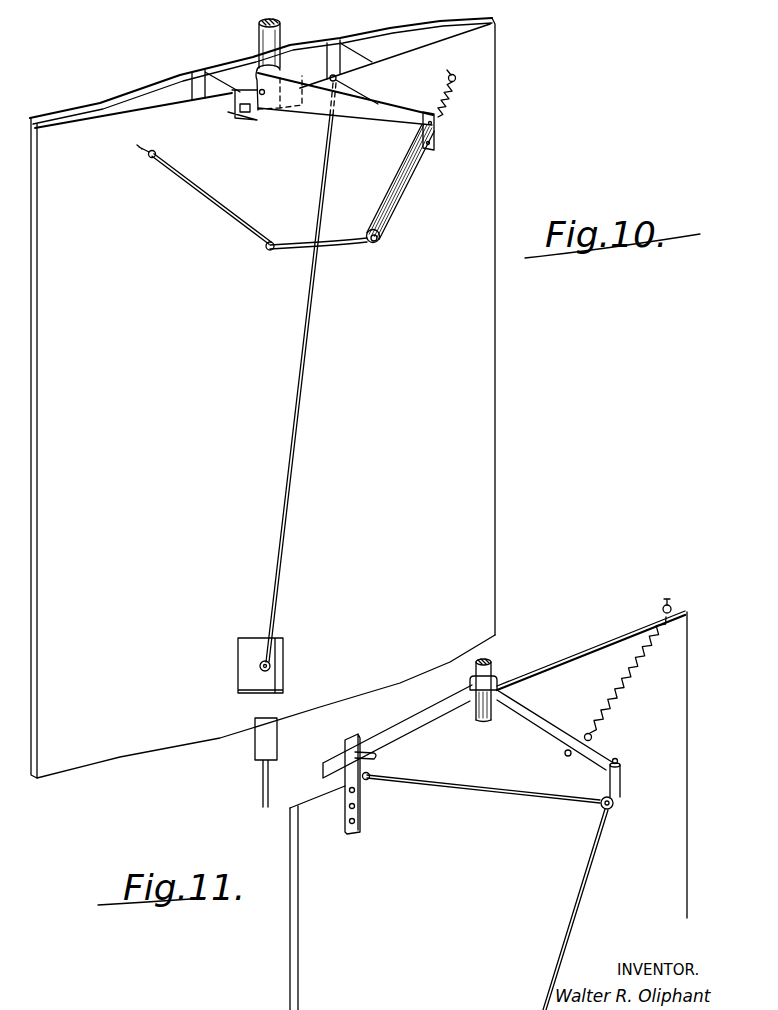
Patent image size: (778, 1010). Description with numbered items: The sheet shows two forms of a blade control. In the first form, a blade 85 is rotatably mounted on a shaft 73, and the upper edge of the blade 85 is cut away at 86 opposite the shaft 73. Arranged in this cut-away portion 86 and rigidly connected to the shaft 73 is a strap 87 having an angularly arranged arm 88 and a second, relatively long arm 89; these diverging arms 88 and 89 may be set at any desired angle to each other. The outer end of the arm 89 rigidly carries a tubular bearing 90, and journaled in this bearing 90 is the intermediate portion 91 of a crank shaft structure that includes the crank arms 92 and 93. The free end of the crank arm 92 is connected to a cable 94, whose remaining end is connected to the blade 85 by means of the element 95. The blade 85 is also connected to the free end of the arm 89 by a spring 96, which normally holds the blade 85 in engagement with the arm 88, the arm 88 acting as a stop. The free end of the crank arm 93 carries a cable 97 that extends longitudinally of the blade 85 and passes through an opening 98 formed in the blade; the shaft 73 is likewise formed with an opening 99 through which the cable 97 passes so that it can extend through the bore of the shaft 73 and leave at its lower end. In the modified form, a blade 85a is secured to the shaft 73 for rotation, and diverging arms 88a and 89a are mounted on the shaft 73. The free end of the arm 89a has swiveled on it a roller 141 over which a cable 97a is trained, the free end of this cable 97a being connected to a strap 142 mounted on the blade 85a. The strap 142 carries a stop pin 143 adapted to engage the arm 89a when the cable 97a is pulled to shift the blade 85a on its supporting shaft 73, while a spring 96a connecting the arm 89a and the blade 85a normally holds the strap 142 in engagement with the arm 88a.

In FIG. 10, the shaft 73 is at (278, 21).
In FIG. 11, the shaft 73 is at (488, 661).
In FIG. 10, the blade 85 is at (263, 398).
In FIG. 10, the cut-away portion 86 is at (236, 99).
In FIG. 10, the strap 87 is at (300, 128).
In FIG. 10, the arm 88 is at (355, 71).
In FIG. 10, the arm 89 is at (378, 122).
In FIG. 10, the tubular bearing 90 is at (403, 178).
In FIG. 10, the intermediate portion 91 is at (383, 242).
In FIG. 10, the crank arm 92 is at (338, 251).
In FIG. 10, the crank arm 93 is at (345, 84).
In FIG. 10, the cable 94 is at (206, 205).
In FIG. 10, the element 95 is at (148, 160).
In FIG. 10, the spring 96 is at (447, 106).
In FIG. 10, the cable 97 is at (303, 392).
In FIG. 10, the opening 98 is at (238, 666).
In FIG. 10, the opening 99 is at (262, 660).
In FIG. 11, the blade 85a is at (488, 810).
In FIG. 11, the arm 88a is at (423, 712).
In FIG. 11, the arm 89a is at (541, 719).
In FIG. 11, the spring 96a is at (628, 688).
In FIG. 11, the cable 97a is at (593, 868).
In FIG. 11, the roller 141 is at (600, 804).
In FIG. 11, the strap 142 is at (362, 808).
In FIG. 11, the stop pin 143 is at (378, 756).